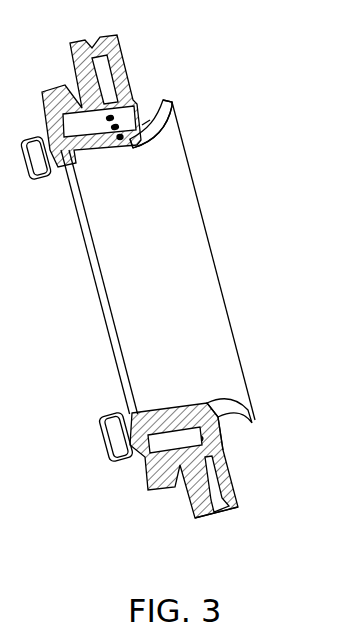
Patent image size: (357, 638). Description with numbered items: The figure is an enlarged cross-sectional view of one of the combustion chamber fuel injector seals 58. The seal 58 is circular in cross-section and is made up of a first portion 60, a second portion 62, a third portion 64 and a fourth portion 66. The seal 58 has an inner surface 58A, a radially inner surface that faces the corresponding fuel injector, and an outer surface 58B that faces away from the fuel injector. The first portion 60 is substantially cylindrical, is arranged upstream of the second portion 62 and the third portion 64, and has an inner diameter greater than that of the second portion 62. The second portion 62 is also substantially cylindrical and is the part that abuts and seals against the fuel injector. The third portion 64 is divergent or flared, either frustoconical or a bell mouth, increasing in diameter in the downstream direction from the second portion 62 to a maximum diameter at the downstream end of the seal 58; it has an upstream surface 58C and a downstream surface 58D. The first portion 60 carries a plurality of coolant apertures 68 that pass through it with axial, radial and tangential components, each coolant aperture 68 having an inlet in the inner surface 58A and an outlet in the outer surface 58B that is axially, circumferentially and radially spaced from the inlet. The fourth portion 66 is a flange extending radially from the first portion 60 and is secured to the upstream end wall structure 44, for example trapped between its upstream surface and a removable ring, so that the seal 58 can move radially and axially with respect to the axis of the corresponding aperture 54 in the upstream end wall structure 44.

The upstream end wall structure 44 is at (252, 495).
The aperture 54 is at (213, 424).
The seal 58 is at (253, 421).
The inner surface 58A is at (130, 150).
The outer surface 58B is at (142, 125).
The upstream surface 58C is at (152, 117).
The downstream surface 58D is at (168, 129).
The first portion 60 is at (163, 412).
The second portion 62 is at (147, 143).
The third portion 64 is at (174, 113).
The fourth portion 66 is at (147, 463).
The coolant aperture 68 is at (107, 153).